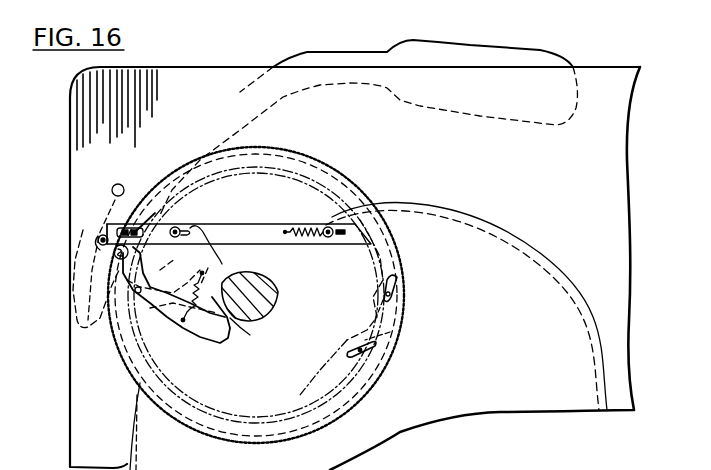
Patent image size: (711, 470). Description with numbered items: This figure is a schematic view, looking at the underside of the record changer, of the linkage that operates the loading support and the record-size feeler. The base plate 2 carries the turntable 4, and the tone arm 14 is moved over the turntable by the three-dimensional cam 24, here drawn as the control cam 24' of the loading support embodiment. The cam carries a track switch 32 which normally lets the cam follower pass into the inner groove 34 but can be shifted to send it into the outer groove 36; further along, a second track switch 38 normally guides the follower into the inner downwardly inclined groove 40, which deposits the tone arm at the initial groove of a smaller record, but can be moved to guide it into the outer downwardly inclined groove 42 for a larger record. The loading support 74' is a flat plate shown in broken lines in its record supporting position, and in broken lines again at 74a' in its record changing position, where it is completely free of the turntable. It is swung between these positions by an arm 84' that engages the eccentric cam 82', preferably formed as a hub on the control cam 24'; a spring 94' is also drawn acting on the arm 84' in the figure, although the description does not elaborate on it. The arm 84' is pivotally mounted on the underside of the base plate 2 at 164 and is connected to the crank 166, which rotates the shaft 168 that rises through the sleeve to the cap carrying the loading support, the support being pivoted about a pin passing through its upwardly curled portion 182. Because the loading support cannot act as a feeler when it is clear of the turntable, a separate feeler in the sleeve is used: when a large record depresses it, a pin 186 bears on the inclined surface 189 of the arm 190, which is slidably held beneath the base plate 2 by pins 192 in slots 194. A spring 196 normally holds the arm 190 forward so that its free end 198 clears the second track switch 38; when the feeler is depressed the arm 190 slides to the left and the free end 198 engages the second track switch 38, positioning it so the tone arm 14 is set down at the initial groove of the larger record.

The base plate 2 is at (638, 72).
The turntable 4 is at (586, 356).
The tone arm 14 is at (482, 50).
The three-dimensional cam 24 is at (257, 292).
The control cam 24' is at (388, 307).
The track switch 32 is at (387, 294).
The inner groove 34 is at (378, 313).
The outer groove 36 is at (392, 332).
The second track switch 38 is at (356, 350).
The inner downwardly inclined groove 40 is at (335, 360).
The outer downwardly inclined groove 42 is at (360, 370).
The loading support 74' is at (152, 260).
The record changing position of loading support 74a' is at (81, 350).
The eccentric cam 82' is at (259, 296).
The arm 84' is at (176, 315).
The spring 94' is at (221, 315).
The pivot 164 is at (136, 292).
The crank 166 is at (102, 235).
The shaft 168 is at (107, 185).
The upwardly curled portion 182 is at (552, 465).
The pin 186 is at (127, 228).
The inclined surface 189 is at (147, 228).
The arm 190 is at (227, 224).
The pins 192 is at (327, 225).
The slots 194 is at (330, 240).
The spring 196 is at (297, 225).
The free end 198 is at (360, 232).